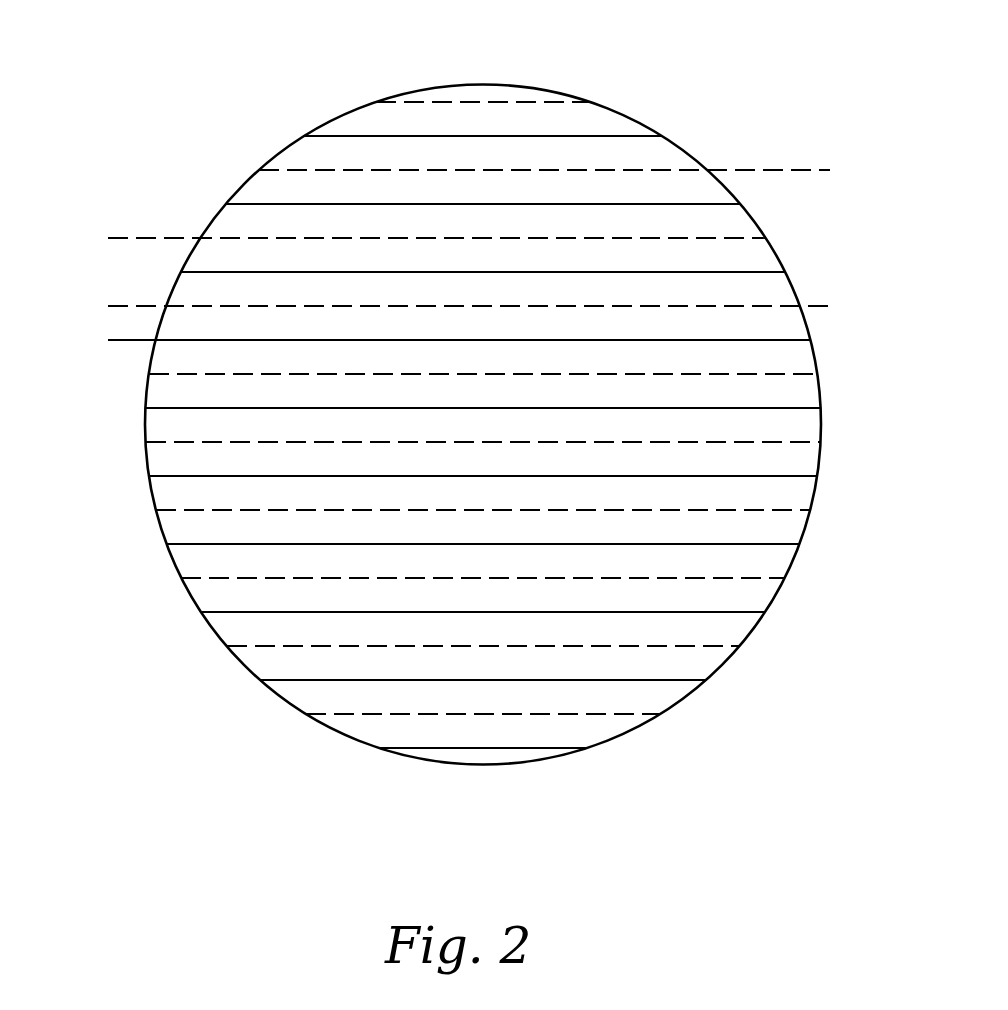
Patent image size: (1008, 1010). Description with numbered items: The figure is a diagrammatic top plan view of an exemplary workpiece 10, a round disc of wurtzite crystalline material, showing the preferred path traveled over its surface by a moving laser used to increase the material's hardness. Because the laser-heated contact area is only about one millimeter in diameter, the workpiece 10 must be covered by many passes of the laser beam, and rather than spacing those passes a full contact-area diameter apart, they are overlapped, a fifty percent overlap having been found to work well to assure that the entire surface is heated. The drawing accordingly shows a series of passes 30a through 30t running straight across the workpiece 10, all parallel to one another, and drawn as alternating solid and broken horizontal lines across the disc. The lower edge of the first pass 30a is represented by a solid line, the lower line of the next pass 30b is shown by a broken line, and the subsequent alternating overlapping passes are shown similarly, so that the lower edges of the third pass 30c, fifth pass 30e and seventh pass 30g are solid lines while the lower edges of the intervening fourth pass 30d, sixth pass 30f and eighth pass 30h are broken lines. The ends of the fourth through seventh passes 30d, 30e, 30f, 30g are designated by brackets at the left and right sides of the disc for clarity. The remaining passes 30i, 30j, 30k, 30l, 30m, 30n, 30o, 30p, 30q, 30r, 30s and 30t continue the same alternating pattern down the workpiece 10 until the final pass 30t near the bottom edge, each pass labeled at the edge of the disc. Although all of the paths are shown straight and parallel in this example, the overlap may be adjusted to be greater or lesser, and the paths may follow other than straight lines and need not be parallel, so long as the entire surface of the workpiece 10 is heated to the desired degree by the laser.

The workpiece 10 is at (136, 812).
The first pass 30a is at (478, 86).
The second pass 30b is at (676, 150).
The third pass 30c is at (285, 150).
The fourth pass 30d is at (822, 170).
The fifth pass 30e is at (116, 204).
The sixth pass 30f is at (822, 238).
The seventh pass 30g is at (116, 272).
The eighth pass 30h is at (811, 345).
The ninth pass 30i is at (148, 392).
The tenth pass 30j is at (820, 420).
The eleventh pass 30k is at (147, 460).
The twelfth pass 30l is at (814, 490).
The thirteenth pass 30m is at (161, 523).
The fourteenth pass 30n is at (794, 560).
The fifteenth pass 30o is at (188, 595).
The sixteenth pass 30p is at (758, 633).
The seventeenth pass 30q is at (240, 663).
The eighteenth pass 30r is at (684, 698).
The nineteenth pass 30s is at (338, 732).
The twentieth pass 30t is at (634, 730).